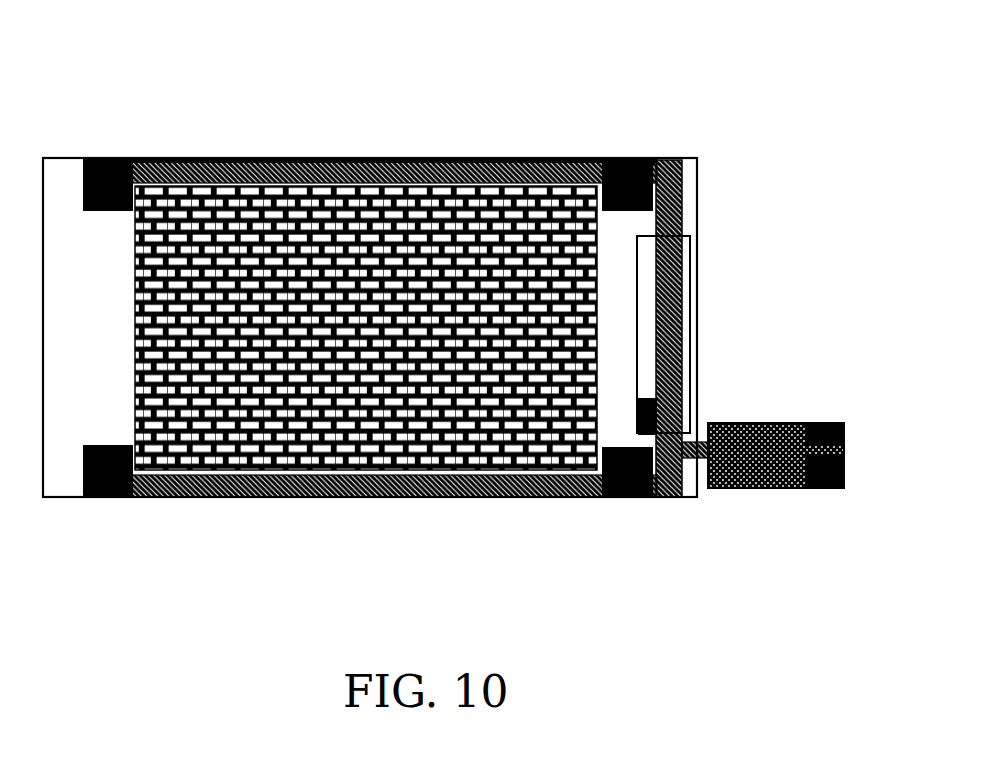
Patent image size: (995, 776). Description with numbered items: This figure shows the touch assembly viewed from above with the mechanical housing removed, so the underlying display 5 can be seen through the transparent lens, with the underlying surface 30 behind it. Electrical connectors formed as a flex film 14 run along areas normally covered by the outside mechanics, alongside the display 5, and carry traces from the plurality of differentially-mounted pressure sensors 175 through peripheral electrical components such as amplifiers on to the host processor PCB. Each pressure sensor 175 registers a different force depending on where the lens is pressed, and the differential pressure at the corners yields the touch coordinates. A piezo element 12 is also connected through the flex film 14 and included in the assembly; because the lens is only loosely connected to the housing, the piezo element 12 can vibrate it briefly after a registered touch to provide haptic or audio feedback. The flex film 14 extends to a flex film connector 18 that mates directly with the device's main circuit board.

The underlying surface 30 is at (698, 183).
The flex film 14 is at (396, 158).
The display 5 is at (362, 340).
The pressure sensors 175 is at (95, 497).
The piezo element 12 is at (686, 405).
The flex film connector 18 is at (787, 488).